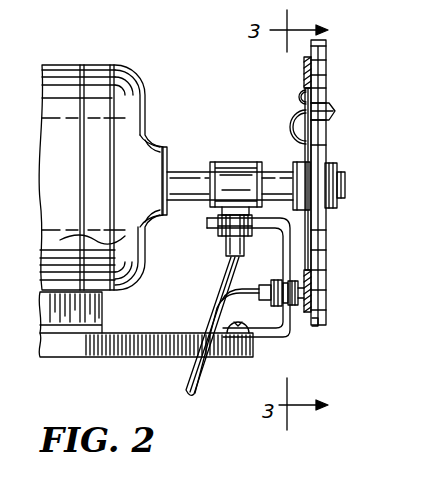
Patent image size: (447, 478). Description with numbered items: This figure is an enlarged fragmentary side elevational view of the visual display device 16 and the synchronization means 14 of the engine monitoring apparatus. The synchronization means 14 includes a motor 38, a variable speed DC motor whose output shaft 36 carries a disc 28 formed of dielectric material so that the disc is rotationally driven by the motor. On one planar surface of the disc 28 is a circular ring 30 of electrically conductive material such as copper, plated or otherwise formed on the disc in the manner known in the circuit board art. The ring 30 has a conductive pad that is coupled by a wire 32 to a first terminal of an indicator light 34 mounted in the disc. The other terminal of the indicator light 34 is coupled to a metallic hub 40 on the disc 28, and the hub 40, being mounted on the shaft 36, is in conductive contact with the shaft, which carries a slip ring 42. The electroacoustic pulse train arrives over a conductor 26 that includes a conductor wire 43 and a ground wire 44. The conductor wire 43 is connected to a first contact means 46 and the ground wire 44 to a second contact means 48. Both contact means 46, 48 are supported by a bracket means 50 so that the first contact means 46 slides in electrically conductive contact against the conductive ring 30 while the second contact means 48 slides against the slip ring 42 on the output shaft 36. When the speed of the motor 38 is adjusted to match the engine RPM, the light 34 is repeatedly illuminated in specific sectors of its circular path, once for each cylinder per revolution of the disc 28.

The synchronization means 14 is at (100, 48).
The visual display device 16 is at (340, 278).
The conductor 26 is at (210, 368).
The disc 28 is at (322, 326).
The circular ring 30 is at (305, 76).
The wire 32 is at (300, 98).
The indicator light 34 is at (336, 111).
The output shaft 36 is at (188, 172).
The motor 38 is at (72, 152).
The metallic hub 40 is at (335, 163).
The slip ring 42 is at (240, 148).
The conductor wire 43 is at (205, 318).
The ground wire 44 is at (232, 262).
The first contact means 46 is at (298, 306).
The second contact means 48 is at (235, 200).
The bracket means 50 is at (264, 340).